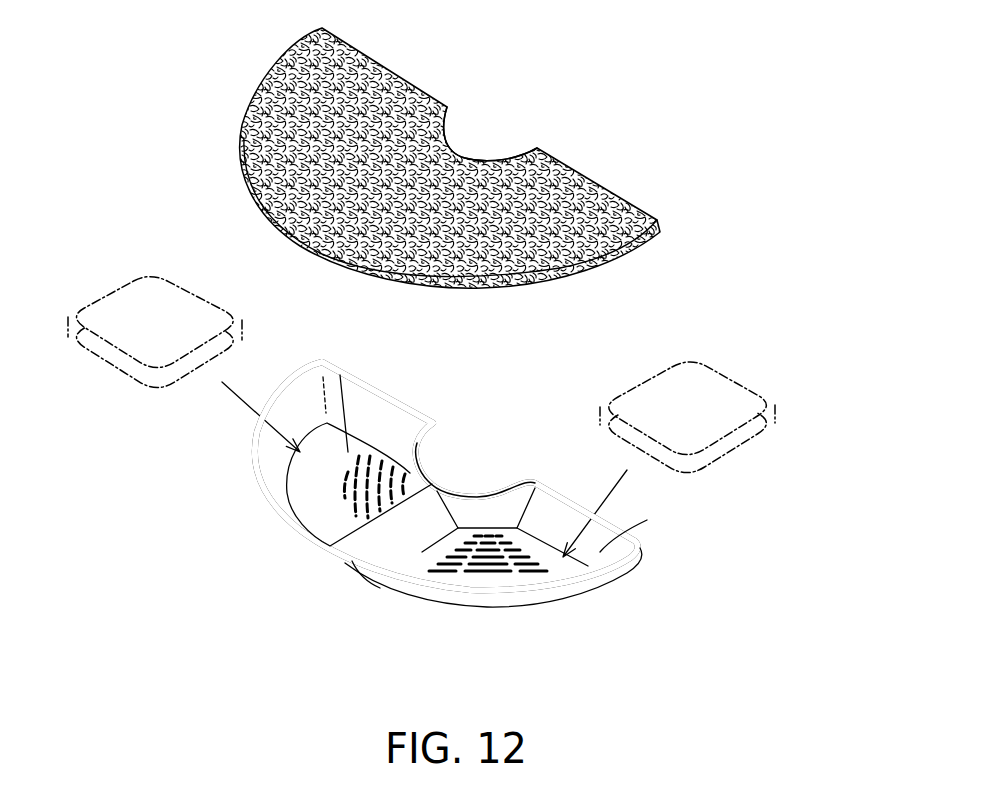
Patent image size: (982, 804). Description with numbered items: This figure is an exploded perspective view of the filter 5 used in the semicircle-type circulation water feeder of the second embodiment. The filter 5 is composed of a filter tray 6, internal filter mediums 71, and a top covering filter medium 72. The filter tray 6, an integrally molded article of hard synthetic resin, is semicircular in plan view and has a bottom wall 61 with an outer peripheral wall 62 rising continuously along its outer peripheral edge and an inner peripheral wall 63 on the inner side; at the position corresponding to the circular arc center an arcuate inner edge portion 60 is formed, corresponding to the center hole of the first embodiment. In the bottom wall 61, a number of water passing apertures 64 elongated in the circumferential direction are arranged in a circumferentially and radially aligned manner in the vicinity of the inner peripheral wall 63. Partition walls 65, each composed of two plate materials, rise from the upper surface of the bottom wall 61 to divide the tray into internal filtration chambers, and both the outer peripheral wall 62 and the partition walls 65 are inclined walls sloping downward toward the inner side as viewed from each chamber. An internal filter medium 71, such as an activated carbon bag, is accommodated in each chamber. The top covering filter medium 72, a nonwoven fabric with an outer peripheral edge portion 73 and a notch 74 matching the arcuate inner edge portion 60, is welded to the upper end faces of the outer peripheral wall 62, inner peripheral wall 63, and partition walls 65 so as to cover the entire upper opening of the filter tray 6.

The filter 5 is at (727, 207).
The filter tray 6 is at (432, 492).
The arcuate inner edge portion 60 is at (462, 465).
The bottom wall 61 is at (508, 578).
The outer peripheral wall 62 is at (272, 460).
The inner peripheral wall 63 is at (488, 515).
The water passing aperture 64 is at (352, 457).
The partition wall 65 is at (363, 577).
The internal filter medium 71 is at (137, 310).
The top covering filter medium 72 is at (450, 173).
The outer peripheral edge portion 73 is at (612, 262).
The cutout of filter sheet 74 is at (460, 152).